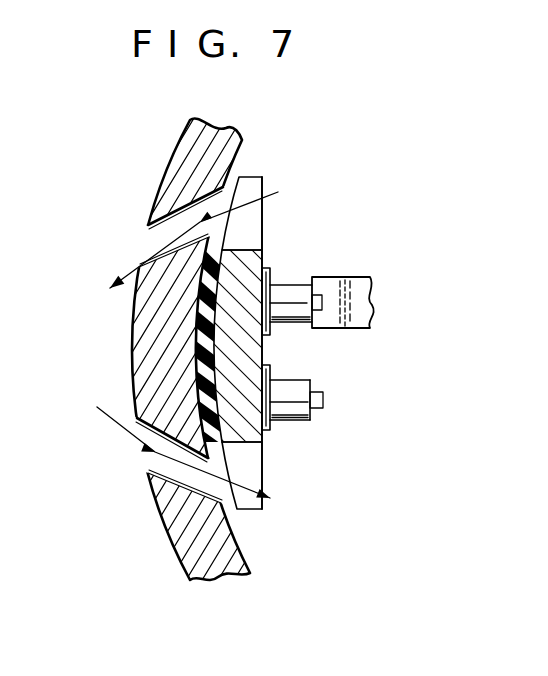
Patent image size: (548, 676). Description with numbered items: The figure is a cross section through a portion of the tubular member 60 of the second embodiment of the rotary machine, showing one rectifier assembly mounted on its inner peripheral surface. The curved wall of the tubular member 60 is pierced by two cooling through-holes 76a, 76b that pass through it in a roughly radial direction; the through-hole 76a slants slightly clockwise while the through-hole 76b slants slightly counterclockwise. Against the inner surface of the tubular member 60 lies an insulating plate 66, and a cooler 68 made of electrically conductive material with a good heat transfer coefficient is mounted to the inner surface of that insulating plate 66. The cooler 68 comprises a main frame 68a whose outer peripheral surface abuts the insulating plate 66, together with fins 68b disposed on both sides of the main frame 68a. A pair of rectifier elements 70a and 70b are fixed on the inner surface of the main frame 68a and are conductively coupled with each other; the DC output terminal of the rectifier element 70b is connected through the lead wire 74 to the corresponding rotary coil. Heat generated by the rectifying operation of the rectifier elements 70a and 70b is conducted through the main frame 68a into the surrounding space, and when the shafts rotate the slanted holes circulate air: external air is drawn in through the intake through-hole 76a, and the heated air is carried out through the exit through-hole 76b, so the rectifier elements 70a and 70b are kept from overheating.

The tubular member 60 is at (214, 133).
The insulating plate 66 is at (216, 245).
The cooler 68 is at (256, 261).
The main frame 68a is at (251, 350).
The fins 68b is at (263, 212).
The rectifier element 70a is at (310, 421).
The rectifier element 70b is at (294, 283).
The lead wire 74 is at (376, 300).
The through-hole 76a is at (154, 470).
The through-hole 76b is at (151, 236).